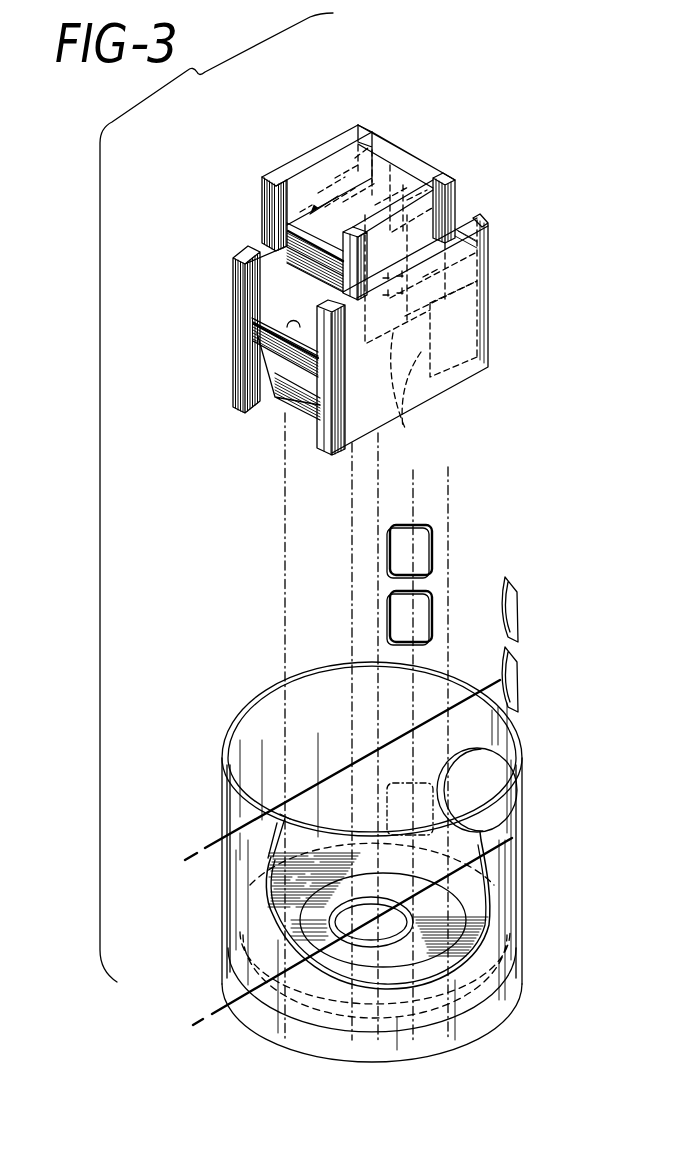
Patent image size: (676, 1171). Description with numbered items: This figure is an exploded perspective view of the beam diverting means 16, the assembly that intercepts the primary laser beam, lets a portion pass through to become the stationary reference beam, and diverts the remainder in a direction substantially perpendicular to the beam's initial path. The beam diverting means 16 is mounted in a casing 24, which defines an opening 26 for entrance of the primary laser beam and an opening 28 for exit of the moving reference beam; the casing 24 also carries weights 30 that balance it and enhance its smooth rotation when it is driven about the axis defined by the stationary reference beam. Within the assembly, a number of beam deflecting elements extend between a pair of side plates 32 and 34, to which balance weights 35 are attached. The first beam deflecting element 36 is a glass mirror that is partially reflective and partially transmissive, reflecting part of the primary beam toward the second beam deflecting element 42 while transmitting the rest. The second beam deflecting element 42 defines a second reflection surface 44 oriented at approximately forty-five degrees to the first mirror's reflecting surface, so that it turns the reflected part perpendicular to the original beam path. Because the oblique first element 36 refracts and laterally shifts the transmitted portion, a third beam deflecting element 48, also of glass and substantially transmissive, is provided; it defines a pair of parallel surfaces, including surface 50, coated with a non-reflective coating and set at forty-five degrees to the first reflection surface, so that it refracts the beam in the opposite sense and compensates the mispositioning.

The beam diverting means 16 is at (512, 267).
The casing 24 is at (502, 855).
The opening 26 is at (400, 936).
The opening 28 is at (478, 785).
The weights 30 is at (501, 652).
The side plate 32 is at (487, 220).
The side plate 34 is at (258, 244).
The balance weights 35 is at (399, 426).
The first beam deflecting element 36 is at (297, 263).
The second beam deflecting element 42 is at (255, 315).
The second reflection surface 44 is at (262, 340).
The third beam deflecting element 48 is at (285, 223).
The surface 50 is at (332, 183).